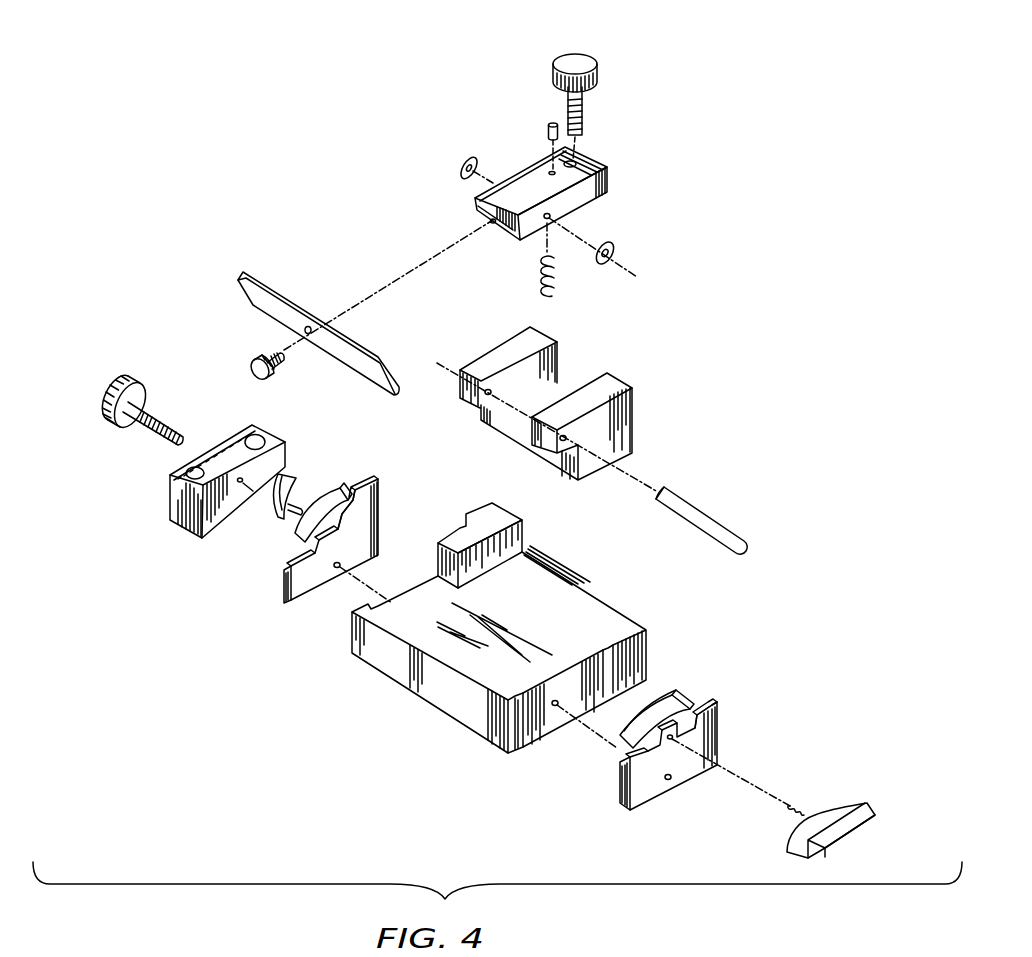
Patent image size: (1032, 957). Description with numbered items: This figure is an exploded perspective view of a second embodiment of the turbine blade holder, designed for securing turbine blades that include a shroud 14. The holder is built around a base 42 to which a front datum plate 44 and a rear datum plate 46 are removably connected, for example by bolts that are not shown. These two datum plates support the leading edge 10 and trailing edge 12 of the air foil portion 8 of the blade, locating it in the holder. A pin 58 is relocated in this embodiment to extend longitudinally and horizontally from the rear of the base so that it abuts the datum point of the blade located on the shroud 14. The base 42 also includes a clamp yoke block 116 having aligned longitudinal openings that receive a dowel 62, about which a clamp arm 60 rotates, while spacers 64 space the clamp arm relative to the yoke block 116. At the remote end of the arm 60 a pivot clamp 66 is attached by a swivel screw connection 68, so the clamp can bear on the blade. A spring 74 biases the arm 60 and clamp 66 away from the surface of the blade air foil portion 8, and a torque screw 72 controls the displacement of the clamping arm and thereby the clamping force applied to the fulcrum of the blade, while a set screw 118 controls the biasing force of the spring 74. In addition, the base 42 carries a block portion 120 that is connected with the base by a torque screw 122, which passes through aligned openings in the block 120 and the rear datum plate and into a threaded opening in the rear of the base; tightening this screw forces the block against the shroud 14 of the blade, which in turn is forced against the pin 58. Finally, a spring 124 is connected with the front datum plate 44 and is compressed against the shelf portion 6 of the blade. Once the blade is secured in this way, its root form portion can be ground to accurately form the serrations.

The shelf portion 6 is at (873, 820).
The air foil portion 8 is at (327, 497).
The leading edge 10 is at (348, 493).
The trailing edge 12 is at (613, 750).
The shroud 14 is at (297, 492).
The base 42 is at (570, 585).
The front datum plate 44 is at (720, 708).
The rear datum plate 46 is at (307, 587).
The pin 58 is at (285, 523).
The clamp arm 60 is at (612, 184).
The dowel 62 is at (707, 517).
The spacers 64 is at (614, 257).
The pivot clamp 66 is at (290, 307).
The swivel screw connection 68 is at (252, 366).
The torque screw 72 is at (588, 70).
The spring 74 is at (552, 287).
The clamp yoke block 116 is at (632, 420).
The set screw 118 is at (548, 130).
The block portion 120 is at (172, 490).
The torque screw 122 is at (132, 381).
The spring 124 is at (803, 805).